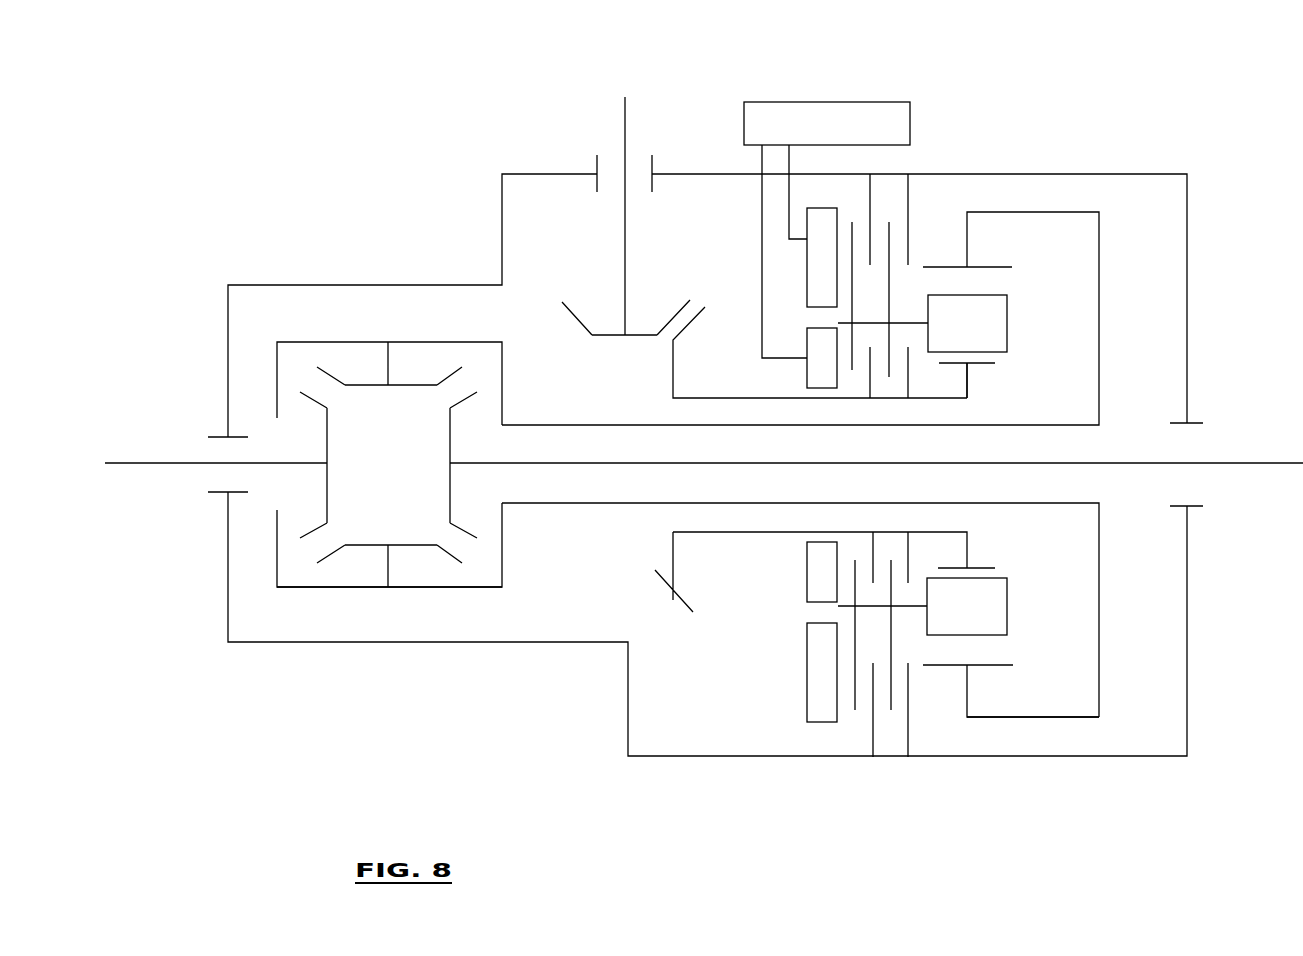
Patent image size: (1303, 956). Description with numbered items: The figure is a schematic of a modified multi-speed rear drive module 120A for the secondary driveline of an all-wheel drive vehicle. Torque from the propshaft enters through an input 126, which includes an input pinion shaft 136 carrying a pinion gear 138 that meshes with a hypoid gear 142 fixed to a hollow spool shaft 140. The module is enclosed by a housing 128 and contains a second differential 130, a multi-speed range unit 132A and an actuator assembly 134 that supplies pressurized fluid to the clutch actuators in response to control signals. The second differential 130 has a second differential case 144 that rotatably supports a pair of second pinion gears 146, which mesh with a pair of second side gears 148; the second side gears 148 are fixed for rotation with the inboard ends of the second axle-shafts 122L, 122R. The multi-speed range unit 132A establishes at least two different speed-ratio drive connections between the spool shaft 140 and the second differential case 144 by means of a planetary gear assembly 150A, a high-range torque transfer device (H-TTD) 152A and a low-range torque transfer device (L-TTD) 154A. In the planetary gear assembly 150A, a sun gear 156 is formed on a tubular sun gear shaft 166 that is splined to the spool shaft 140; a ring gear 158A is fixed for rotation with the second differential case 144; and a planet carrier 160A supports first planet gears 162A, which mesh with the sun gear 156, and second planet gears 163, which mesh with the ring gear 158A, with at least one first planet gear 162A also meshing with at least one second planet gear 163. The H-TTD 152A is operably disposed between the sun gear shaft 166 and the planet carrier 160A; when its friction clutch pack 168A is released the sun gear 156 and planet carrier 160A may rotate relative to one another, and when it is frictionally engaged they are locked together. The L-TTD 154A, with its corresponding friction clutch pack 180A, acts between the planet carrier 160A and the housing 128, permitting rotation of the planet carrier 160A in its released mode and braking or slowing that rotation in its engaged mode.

The rear drive module 120A is at (1252, 126).
The second axle-shaft 122L is at (148, 462).
The second axle-shaft 122R is at (1222, 463).
The input 126 is at (528, 240).
The housing 128 is at (1187, 271).
The second differential 130 is at (250, 595).
The multi-speed range unit 132A is at (950, 735).
The actuator assembly 134 is at (916, 108).
The input pinion shaft 136 is at (622, 128).
The pinion gear 138 is at (572, 316).
The hollow spool shaft 140 is at (712, 398).
The hypoid gear 142 is at (683, 600).
The second differential case 144 is at (433, 590).
The second pinion gears 146 is at (360, 385).
The second side gears 148 is at (327, 435).
The planetary gear assembly 150A is at (991, 205).
The high-range torque transfer device 152A is at (794, 568).
The low-range torque transfer device 154A is at (851, 725).
The sun gear 156 is at (968, 385).
The ring gear 158A is at (1065, 717).
The planet carrier 160A is at (915, 607).
The first planet gears 162A is at (989, 333).
The second planet gears 163 is at (1007, 603).
The sun gear shaft 166 is at (748, 532).
The clutch pack 168A is at (873, 378).
The clutch plates 180A is at (872, 218).